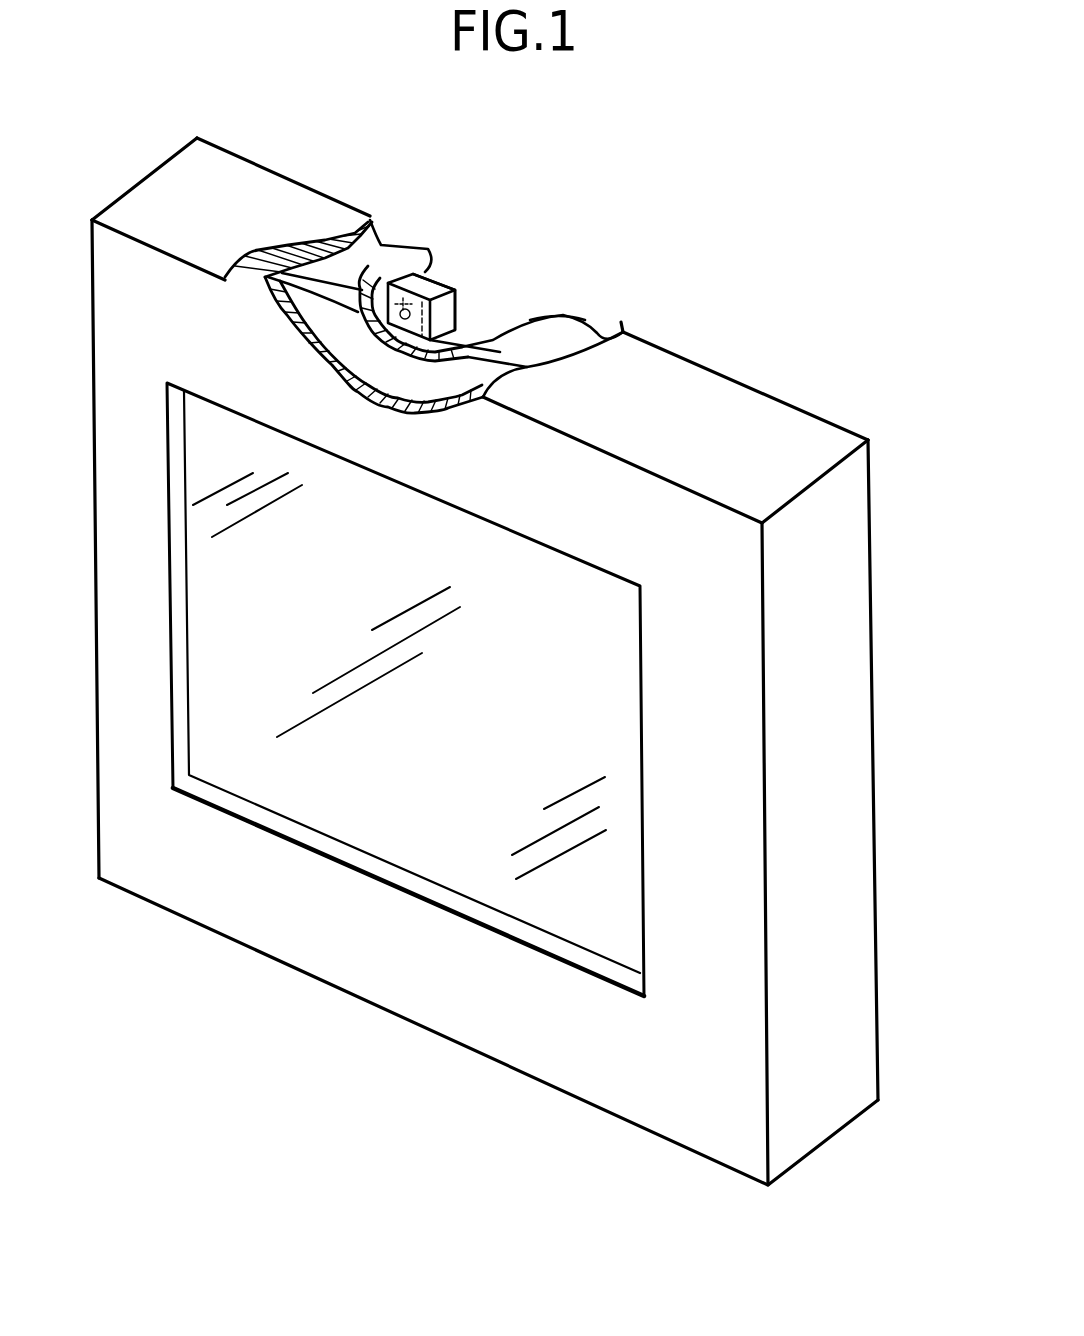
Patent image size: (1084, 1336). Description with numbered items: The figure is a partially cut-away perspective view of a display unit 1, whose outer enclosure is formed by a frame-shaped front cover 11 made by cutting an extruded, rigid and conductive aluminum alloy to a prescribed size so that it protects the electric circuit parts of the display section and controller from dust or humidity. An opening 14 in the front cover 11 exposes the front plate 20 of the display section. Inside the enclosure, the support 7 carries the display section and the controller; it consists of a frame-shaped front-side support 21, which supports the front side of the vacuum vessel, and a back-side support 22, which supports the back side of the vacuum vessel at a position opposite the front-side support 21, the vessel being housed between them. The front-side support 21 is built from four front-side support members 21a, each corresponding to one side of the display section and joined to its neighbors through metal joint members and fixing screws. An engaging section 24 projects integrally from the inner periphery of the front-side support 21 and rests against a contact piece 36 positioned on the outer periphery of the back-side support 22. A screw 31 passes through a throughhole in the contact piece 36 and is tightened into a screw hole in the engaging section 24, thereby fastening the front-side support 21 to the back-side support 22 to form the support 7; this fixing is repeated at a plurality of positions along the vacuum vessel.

The display unit 1 is at (645, 1268).
The support 7 is at (486, 261).
The front cover 11 is at (858, 760).
The opening 14 is at (512, 918).
The front plate 20 is at (372, 842).
The front-side support 21 is at (382, 243).
The front-side support member 21a is at (597, 333).
The back-side support 22 is at (465, 352).
The engaging section 24 is at (415, 247).
The screw 31 is at (435, 288).
The contact piece 36 is at (452, 292).